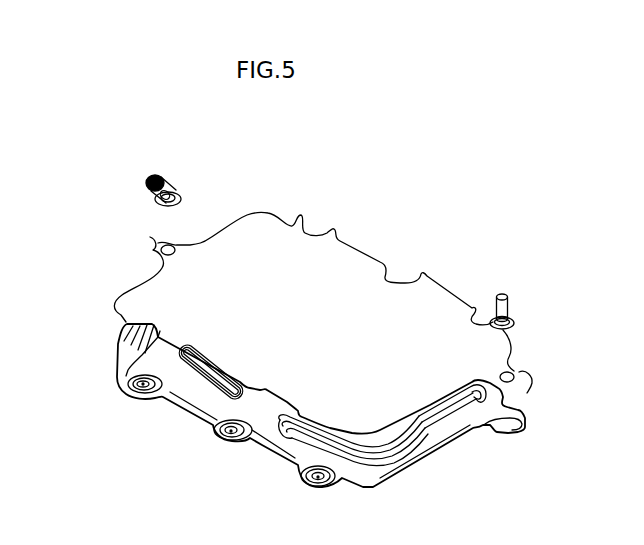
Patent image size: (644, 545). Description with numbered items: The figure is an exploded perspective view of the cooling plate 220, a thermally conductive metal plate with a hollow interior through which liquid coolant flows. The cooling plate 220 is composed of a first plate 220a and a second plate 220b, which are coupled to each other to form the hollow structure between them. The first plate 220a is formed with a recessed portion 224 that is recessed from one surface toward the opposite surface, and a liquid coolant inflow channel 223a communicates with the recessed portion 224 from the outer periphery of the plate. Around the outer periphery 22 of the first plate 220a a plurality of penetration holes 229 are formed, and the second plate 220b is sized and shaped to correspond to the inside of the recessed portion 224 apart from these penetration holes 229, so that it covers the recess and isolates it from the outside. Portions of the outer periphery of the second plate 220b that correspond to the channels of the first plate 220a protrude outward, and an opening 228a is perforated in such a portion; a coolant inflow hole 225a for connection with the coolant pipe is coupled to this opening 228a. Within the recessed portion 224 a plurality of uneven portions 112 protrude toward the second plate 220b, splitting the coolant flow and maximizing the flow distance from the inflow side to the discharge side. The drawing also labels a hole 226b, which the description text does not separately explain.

The cooling plate 220 is at (88, 161).
The first plate 220a is at (439, 483).
The second plate 220b is at (390, 239).
The coolant inflow hole 225a is at (172, 177).
The hole 226b is at (159, 245).
The opening 228a is at (512, 377).
The liquid coolant inflow channel 223a is at (524, 427).
The recessed portion 224 is at (148, 357).
The penetration holes 229 is at (140, 397).
The outer periphery 22 is at (203, 416).
The uneven portions 112 is at (398, 462).